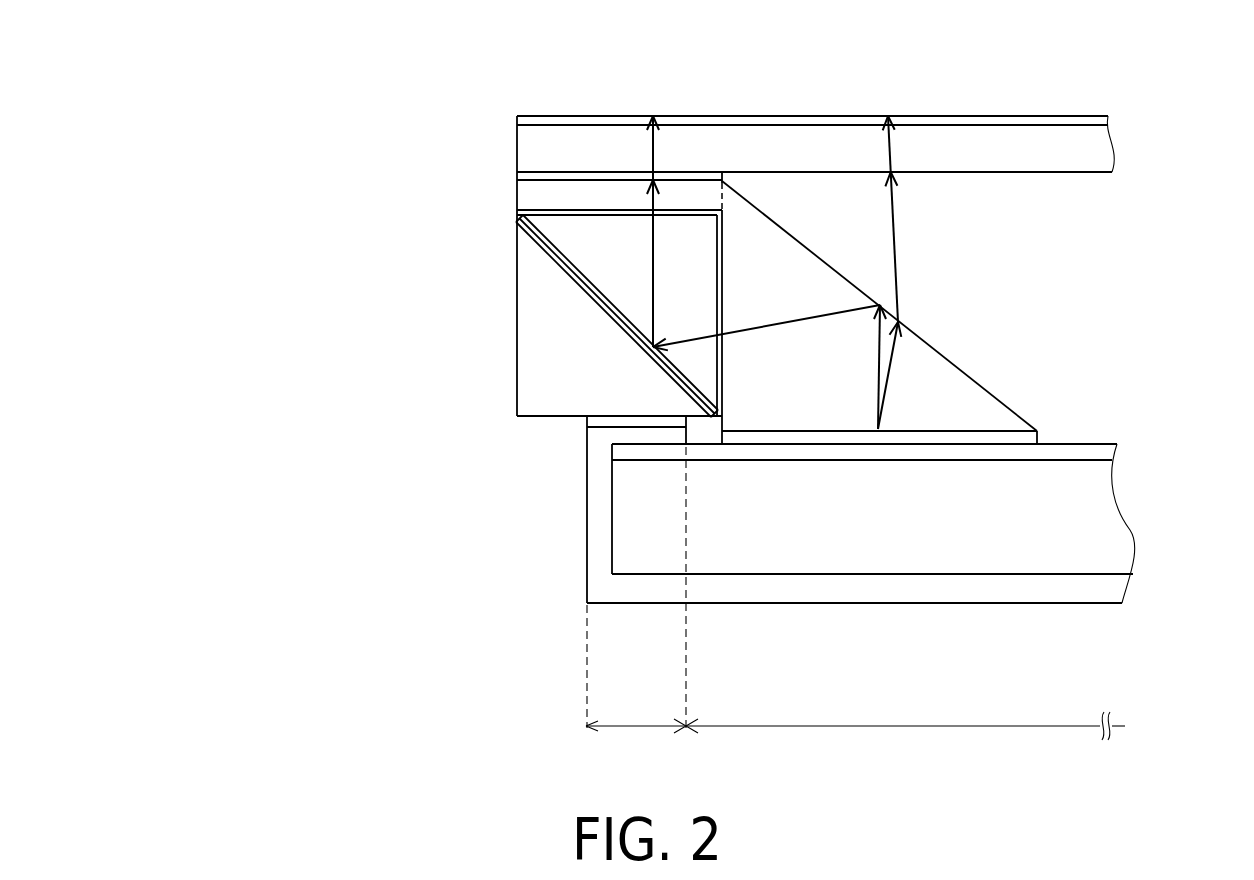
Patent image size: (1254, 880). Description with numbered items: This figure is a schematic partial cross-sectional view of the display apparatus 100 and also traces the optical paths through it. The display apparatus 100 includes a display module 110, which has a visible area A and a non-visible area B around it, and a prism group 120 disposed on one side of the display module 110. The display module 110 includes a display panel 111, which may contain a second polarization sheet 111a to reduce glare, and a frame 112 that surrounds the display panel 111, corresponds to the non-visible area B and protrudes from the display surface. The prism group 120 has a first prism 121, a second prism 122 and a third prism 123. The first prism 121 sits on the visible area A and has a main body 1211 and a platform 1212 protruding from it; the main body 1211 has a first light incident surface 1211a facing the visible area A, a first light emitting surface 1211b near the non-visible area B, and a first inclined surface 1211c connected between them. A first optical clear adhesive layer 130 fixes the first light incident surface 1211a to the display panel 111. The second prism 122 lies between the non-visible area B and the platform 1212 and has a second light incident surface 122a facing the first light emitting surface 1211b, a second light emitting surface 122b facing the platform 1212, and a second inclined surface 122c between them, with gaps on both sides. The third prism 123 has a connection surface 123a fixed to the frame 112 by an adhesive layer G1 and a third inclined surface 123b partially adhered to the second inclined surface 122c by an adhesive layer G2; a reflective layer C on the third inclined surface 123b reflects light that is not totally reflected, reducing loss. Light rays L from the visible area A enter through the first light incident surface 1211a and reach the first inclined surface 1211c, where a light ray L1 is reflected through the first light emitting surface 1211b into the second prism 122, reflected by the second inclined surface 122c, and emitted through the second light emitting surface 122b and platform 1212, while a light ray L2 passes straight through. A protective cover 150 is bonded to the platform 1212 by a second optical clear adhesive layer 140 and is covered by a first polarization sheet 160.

The display apparatus 100 is at (242, 152).
The display module 110 is at (503, 480).
The display panel 111 is at (638, 494).
The second polarization sheet 111a is at (1100, 452).
The frame 112 is at (607, 535).
The prism group 120 is at (385, 138).
The first prism 121 is at (503, 190).
The main body 1211 is at (792, 267).
The first light incident surface 1211a is at (857, 418).
The first light emitting surface 1211b is at (724, 393).
The first inclined surface 1211c is at (961, 387).
The platform 1212 is at (670, 195).
The second prism 122 is at (523, 208).
The second light incident surface 122a is at (717, 247).
The second light emitting surface 122b is at (615, 220).
The second inclined surface 122c is at (552, 238).
The third prism 123 is at (523, 244).
The connection surface 123a is at (539, 405).
The third inclined surface 123b is at (645, 363).
The first optical clear adhesive layer 130 is at (1027, 437).
The second optical clear adhesive layer 140 is at (724, 178).
The protective cover 150 is at (1008, 140).
The first polarization sheet 160 is at (1073, 121).
The adhesive layer G1 is at (592, 421).
The adhesive layer G2 is at (534, 232).
The reflective layer C is at (600, 314).
The light rays L is at (887, 395).
The light ray L1 is at (848, 305).
The light ray L2 is at (895, 262).
The visible area A is at (905, 603).
The non-visible area B is at (642, 682).